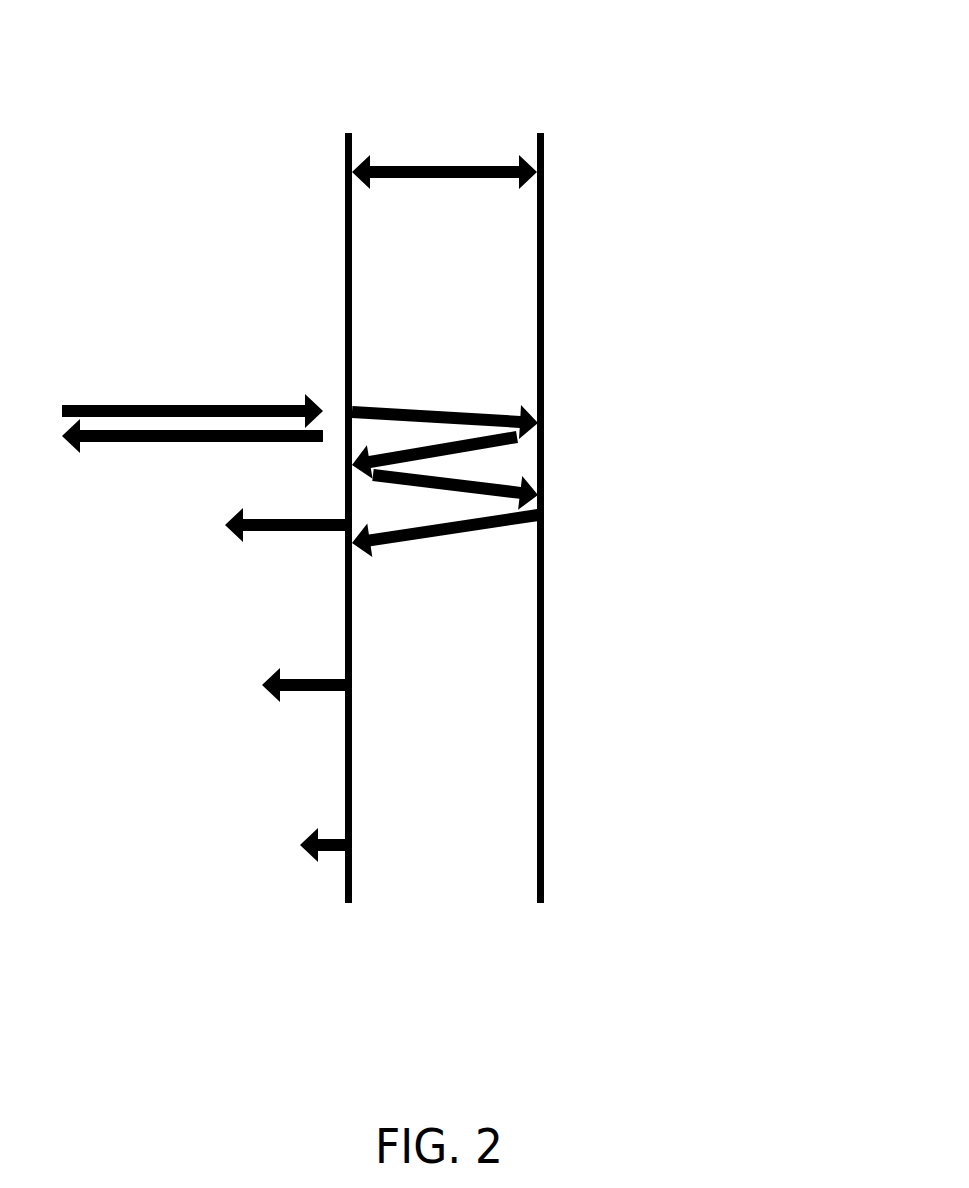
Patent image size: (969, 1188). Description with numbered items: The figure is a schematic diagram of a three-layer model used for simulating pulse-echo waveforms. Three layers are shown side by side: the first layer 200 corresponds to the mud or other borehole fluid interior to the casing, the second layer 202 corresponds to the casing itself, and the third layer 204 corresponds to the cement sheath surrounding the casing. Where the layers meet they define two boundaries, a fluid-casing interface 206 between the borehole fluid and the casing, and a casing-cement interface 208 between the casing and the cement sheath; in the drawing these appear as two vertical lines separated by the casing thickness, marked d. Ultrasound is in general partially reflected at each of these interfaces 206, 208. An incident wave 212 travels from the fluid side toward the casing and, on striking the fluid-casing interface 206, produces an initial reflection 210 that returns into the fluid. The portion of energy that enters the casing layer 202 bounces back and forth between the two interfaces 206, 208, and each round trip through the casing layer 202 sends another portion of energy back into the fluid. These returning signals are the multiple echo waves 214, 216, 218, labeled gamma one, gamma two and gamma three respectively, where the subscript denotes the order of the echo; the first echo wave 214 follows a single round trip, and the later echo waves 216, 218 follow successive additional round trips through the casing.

The mud or borehole fluid layer 200 is at (170, 112).
The casing layer 202 is at (460, 108).
The cement sheath layer 204 is at (725, 110).
The fluid-casing interface 206 is at (320, 888).
The casing-cement interface 208 is at (530, 888).
The initial reflection 210 is at (160, 442).
The incident wave 212 is at (190, 405).
The first echo wave 214 is at (303, 518).
The second echo wave 216 is at (306, 678).
The third echo wave 218 is at (340, 838).